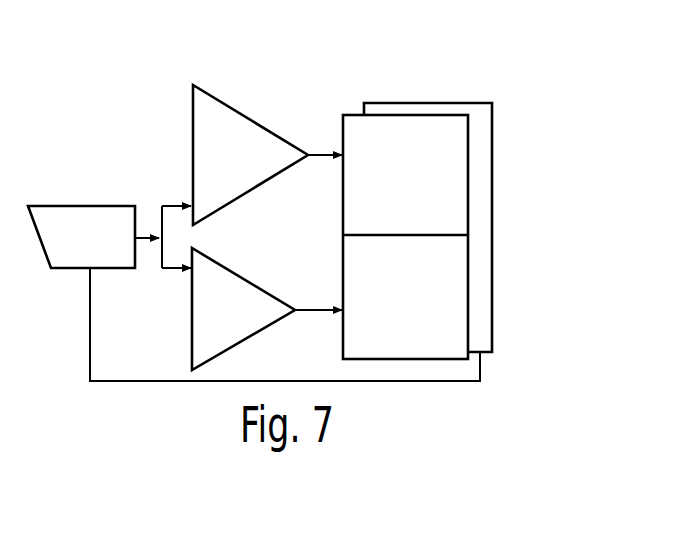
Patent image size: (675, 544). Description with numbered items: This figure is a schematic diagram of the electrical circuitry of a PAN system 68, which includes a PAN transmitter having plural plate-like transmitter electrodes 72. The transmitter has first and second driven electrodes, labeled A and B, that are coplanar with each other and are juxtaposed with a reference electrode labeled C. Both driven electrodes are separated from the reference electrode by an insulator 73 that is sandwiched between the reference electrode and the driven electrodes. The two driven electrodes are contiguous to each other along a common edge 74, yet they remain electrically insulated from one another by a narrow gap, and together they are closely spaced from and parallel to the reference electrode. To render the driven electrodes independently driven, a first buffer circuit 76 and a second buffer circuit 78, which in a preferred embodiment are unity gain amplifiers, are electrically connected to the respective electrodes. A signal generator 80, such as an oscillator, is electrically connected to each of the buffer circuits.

The PAN system 68 is at (243, 204).
The transmitter electrodes 72 is at (405, 121).
The insulator 73 is at (453, 113).
The common edge 74 is at (450, 230).
The first buffer circuit 76 is at (193, 148).
The second buffer circuit 78 is at (192, 326).
The signal generator 80 is at (101, 206).